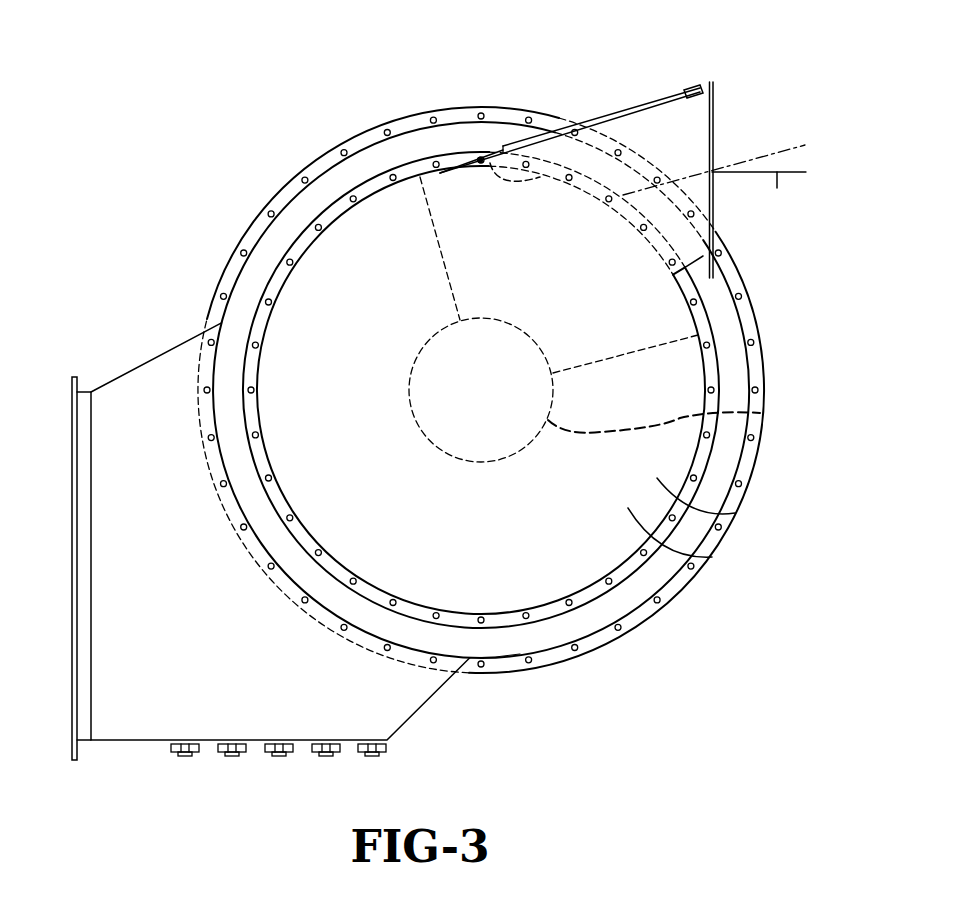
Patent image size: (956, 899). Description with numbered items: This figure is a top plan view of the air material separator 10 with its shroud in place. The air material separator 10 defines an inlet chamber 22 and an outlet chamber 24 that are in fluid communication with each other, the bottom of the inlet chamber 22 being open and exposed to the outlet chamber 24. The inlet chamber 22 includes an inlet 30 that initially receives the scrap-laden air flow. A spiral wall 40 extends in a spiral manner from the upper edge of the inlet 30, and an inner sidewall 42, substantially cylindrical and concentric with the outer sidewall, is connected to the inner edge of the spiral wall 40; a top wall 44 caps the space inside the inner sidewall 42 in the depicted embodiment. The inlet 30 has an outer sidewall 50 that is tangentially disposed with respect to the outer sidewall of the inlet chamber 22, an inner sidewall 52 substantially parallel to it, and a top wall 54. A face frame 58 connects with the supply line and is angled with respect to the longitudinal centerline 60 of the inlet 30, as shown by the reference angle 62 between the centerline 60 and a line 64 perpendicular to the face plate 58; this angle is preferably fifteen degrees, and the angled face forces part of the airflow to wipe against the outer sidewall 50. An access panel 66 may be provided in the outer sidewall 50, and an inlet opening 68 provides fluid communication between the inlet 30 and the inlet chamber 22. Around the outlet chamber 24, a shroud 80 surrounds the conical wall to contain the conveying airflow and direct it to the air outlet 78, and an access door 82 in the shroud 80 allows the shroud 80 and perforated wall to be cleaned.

The air material separator 10 is at (243, 112).
The inlet chamber 22 is at (532, 572).
The outlet chamber 24 is at (646, 614).
The inlet 30 is at (638, 110).
The spiral wall 40 is at (735, 513).
The inner sidewall 42 is at (760, 413).
The top wall 44 is at (712, 557).
The outer sidewall 50 is at (665, 99).
The inner sidewall 52 is at (700, 272).
The top wall 54 is at (678, 148).
The face frame 58 is at (713, 88).
The longitudinal centerline 60 is at (787, 150).
The reference angle 62 is at (777, 190).
The line 64 is at (758, 175).
The access panel 66 is at (598, 124).
The inlet opening 68 is at (493, 165).
The air outlet 78 is at (72, 418).
The shroud 80 is at (497, 642).
The access door 82 is at (352, 742).